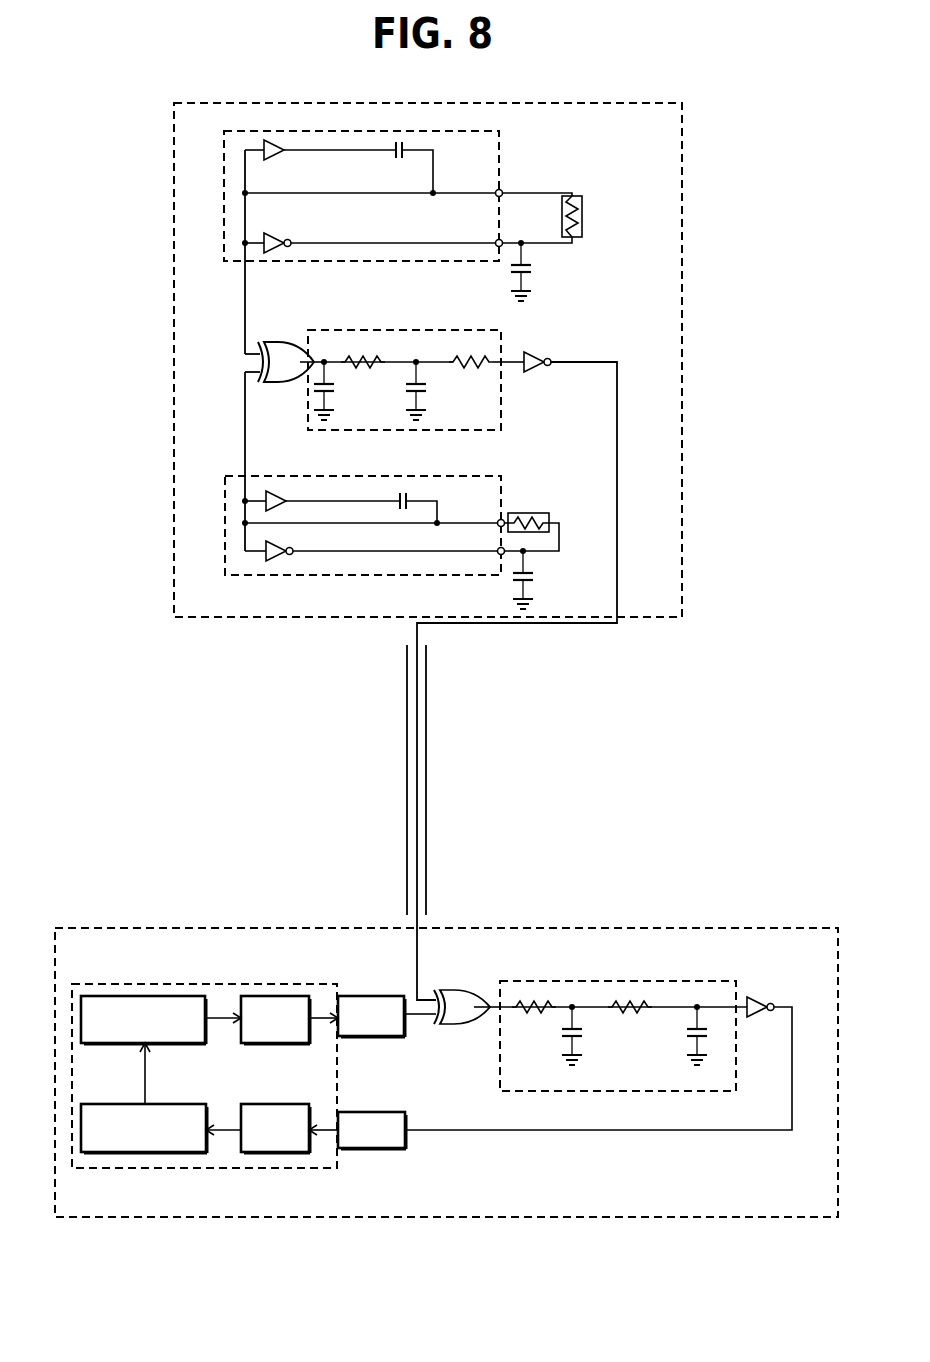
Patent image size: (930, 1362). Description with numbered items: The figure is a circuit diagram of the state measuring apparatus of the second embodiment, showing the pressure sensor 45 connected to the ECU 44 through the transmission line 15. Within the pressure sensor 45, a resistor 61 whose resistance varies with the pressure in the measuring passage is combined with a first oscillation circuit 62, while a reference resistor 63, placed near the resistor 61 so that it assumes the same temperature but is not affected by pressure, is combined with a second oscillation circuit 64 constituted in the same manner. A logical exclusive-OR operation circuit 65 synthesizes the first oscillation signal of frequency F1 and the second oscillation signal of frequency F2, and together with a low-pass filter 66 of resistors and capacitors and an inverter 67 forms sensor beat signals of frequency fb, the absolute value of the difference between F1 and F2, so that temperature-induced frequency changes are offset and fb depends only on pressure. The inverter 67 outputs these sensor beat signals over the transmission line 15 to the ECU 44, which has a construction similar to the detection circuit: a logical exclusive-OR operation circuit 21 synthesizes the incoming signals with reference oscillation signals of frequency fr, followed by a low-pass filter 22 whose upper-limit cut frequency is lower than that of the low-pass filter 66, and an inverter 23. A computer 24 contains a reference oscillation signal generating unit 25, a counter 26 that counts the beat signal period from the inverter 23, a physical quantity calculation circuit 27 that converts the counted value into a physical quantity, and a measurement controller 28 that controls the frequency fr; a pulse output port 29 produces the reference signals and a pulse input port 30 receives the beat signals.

The pressure sensor 45 is at (563, 103).
The first oscillation circuit 62 is at (500, 152).
The resistor 61 is at (582, 215).
The logical exclusive-OR operation circuit 65 is at (280, 344).
The low-pass filter 66 is at (424, 331).
The inverter 67 is at (537, 372).
The second oscillation circuit 64 is at (420, 477).
The reference resistor 63 is at (520, 512).
The transmission line 15 is at (432, 728).
The ECU 44 is at (162, 927).
The computer 24 is at (305, 984).
The measurement controller 28 is at (156, 996).
The reference oscillation signal generating unit 25 is at (260, 996).
The pulse output port 29 is at (392, 996).
The logical exclusive-OR operation circuit 21 is at (462, 990).
The low-pass filter 22 is at (688, 981).
The inverter 23 is at (763, 997).
The physical quantity calculation circuit 27 is at (148, 1154).
The counter 26 is at (272, 1154).
The pulse input port 30 is at (372, 1150).